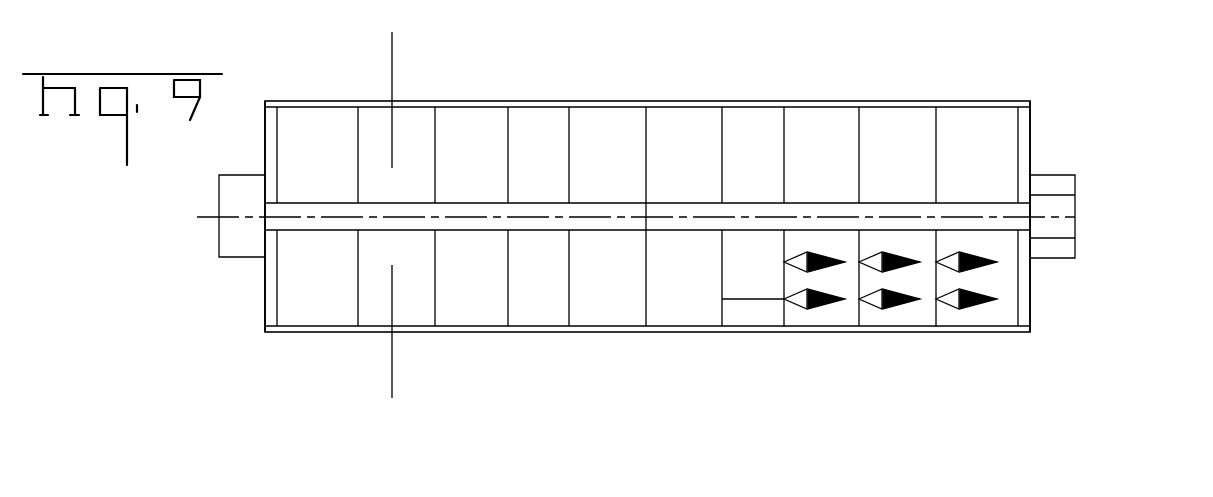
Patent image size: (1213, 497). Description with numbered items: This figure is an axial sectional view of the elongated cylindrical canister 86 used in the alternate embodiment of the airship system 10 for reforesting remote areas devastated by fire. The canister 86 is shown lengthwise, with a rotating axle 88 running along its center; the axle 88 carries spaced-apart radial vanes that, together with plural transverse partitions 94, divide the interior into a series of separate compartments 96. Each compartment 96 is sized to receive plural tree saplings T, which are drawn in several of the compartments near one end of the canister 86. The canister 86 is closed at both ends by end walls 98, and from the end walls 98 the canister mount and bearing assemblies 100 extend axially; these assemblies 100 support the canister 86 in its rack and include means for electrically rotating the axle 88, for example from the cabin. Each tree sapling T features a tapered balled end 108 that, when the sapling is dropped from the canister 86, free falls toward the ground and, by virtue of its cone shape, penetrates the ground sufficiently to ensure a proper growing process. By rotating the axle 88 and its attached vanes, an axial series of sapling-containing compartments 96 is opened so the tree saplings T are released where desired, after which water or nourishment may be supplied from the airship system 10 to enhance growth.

The airship system 10 is at (392, 32).
The cylindrical canister 86 is at (762, 101).
The rotating axle 88 is at (1000, 218).
The transverse partitions 94 is at (785, 162).
The compartments 96 is at (663, 297).
The end walls 98 is at (262, 292).
The canister mount and bearing assemblies 100 is at (1075, 175).
The tapered balled end 108 is at (800, 303).
The tree saplings T is at (883, 303).